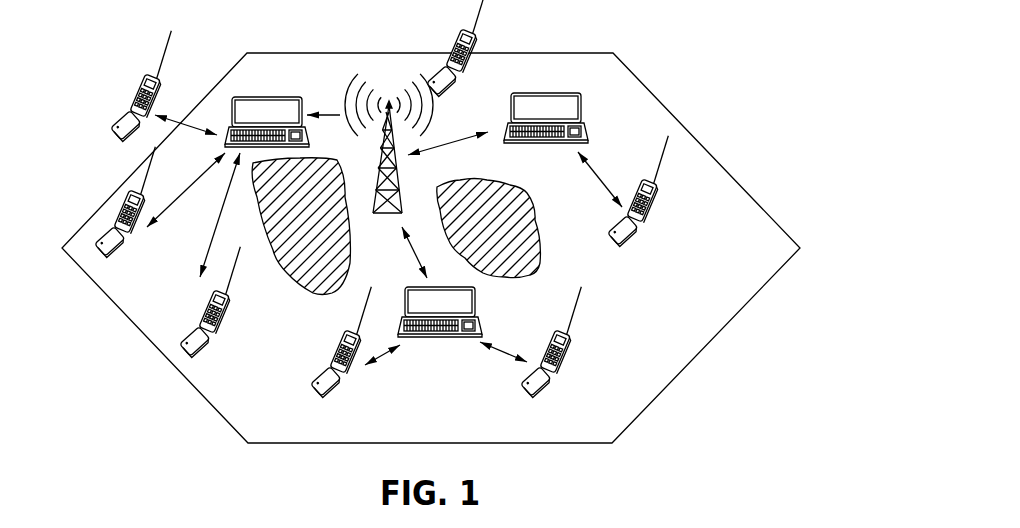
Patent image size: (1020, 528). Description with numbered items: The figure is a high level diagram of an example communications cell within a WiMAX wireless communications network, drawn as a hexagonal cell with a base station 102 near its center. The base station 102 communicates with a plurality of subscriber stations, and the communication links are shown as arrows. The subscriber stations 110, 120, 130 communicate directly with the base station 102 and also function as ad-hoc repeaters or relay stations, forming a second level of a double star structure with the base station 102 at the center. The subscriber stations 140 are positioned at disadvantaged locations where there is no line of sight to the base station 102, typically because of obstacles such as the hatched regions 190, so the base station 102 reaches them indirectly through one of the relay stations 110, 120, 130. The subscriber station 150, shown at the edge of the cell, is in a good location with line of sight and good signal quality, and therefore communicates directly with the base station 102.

The base station 102 is at (398, 185).
The subscriber station 110 is at (581, 114).
The subscriber station 120 is at (475, 307).
The subscriber station 130 is at (250, 95).
The subscriber station 140 is at (125, 118).
The subscriber station 150 is at (482, 35).
The obstacle 190 is at (307, 297).